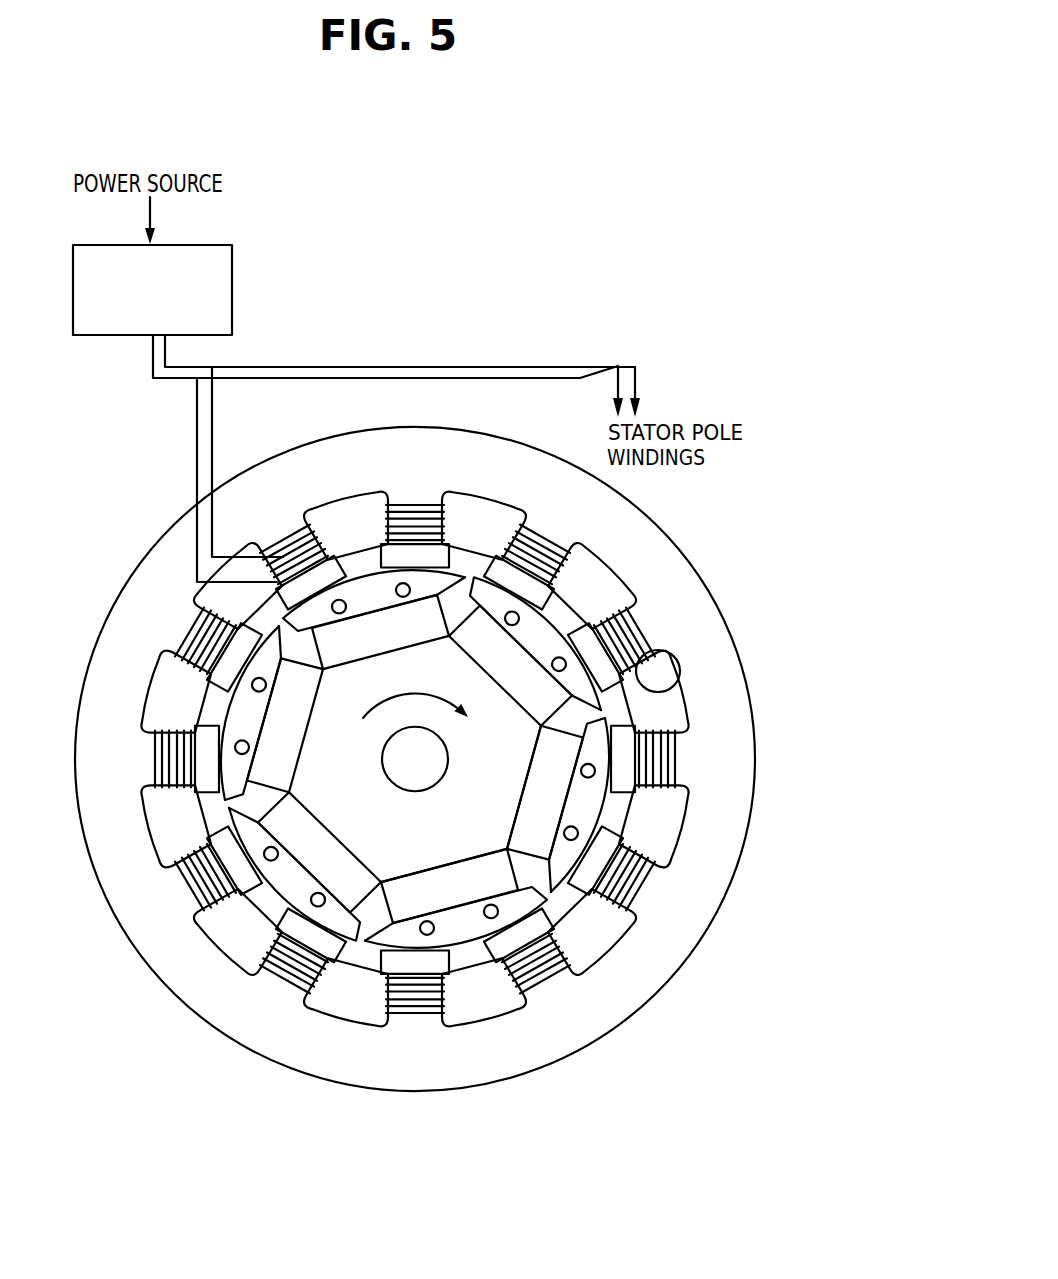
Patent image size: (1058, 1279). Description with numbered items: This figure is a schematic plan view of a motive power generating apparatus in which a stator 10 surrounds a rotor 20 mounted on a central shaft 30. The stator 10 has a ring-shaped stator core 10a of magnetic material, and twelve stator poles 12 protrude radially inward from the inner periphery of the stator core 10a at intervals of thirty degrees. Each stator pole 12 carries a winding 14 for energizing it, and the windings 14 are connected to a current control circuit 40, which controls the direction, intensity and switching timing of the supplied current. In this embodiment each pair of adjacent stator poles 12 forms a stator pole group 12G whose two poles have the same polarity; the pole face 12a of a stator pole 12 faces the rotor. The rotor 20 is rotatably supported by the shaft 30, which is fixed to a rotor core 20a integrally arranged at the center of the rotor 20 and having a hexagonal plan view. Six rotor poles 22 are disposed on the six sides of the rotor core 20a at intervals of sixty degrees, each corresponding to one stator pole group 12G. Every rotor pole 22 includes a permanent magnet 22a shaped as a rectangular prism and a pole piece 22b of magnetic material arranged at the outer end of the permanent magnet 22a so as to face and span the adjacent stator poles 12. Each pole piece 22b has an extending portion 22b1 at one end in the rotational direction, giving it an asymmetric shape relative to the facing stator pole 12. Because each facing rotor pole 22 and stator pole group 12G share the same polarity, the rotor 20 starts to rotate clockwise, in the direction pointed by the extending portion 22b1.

The stator 10 is at (683, 536).
The stator core 10a is at (672, 587).
The stator pole 12 is at (818, 630).
The stator pole tip 12a is at (678, 660).
The stator pole group 12G is at (600, 1104).
The winding 14 is at (650, 668).
The rotor 20 is at (505, 750).
The rotor core 20a is at (613, 942).
The rotor pole 22 is at (890, 746).
The permanent magnet 22a is at (587, 724).
The pole piece 22b is at (580, 817).
The extending portion 22b1 is at (628, 900).
The shaft 30 is at (430, 772).
The current control circuit 40 is at (227, 274).